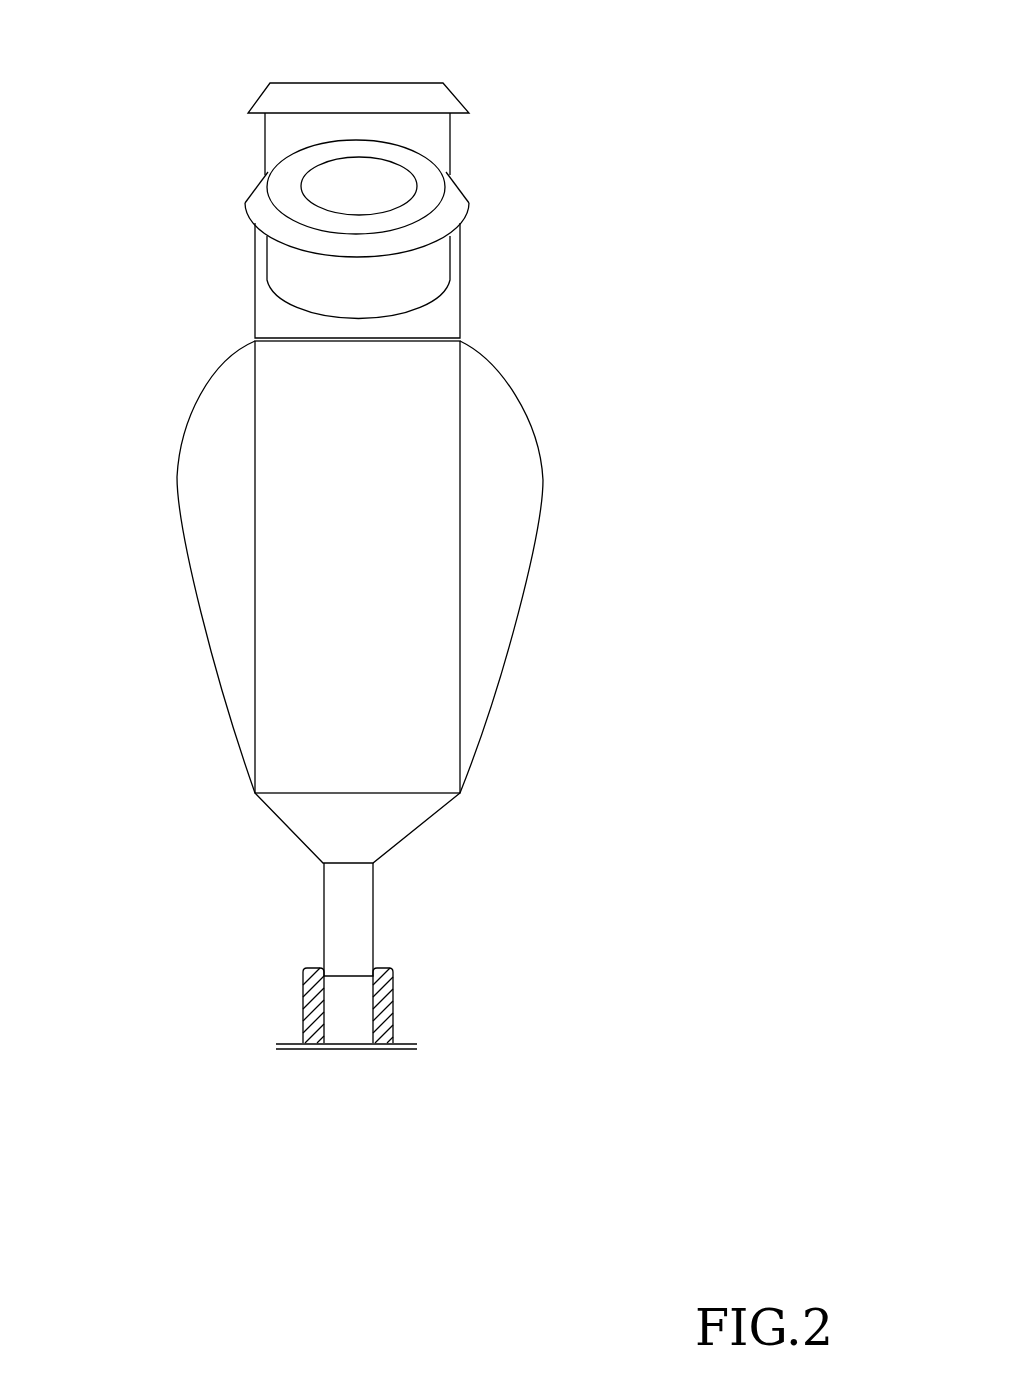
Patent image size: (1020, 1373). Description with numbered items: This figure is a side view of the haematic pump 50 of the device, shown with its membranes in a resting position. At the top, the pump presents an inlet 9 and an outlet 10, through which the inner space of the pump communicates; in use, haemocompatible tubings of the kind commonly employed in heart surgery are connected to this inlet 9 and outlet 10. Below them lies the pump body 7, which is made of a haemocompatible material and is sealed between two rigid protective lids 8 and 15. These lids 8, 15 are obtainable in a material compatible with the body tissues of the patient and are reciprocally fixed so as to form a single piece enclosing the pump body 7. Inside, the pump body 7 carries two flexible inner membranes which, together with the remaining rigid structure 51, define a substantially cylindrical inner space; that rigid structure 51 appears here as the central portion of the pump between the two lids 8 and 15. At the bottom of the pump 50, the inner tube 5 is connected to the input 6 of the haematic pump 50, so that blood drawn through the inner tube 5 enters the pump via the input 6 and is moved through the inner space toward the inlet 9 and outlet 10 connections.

The inlet 9 is at (408, 93).
The outlet 10 is at (290, 278).
The pump body 7 is at (462, 398).
The haematic pump 50 is at (573, 480).
The rigid protective lid 8 is at (197, 481).
The rigid structure 51 is at (275, 725).
The rigid protective lid 15 is at (498, 613).
The input 6 is at (335, 935).
The inner tube 5 is at (393, 1002).